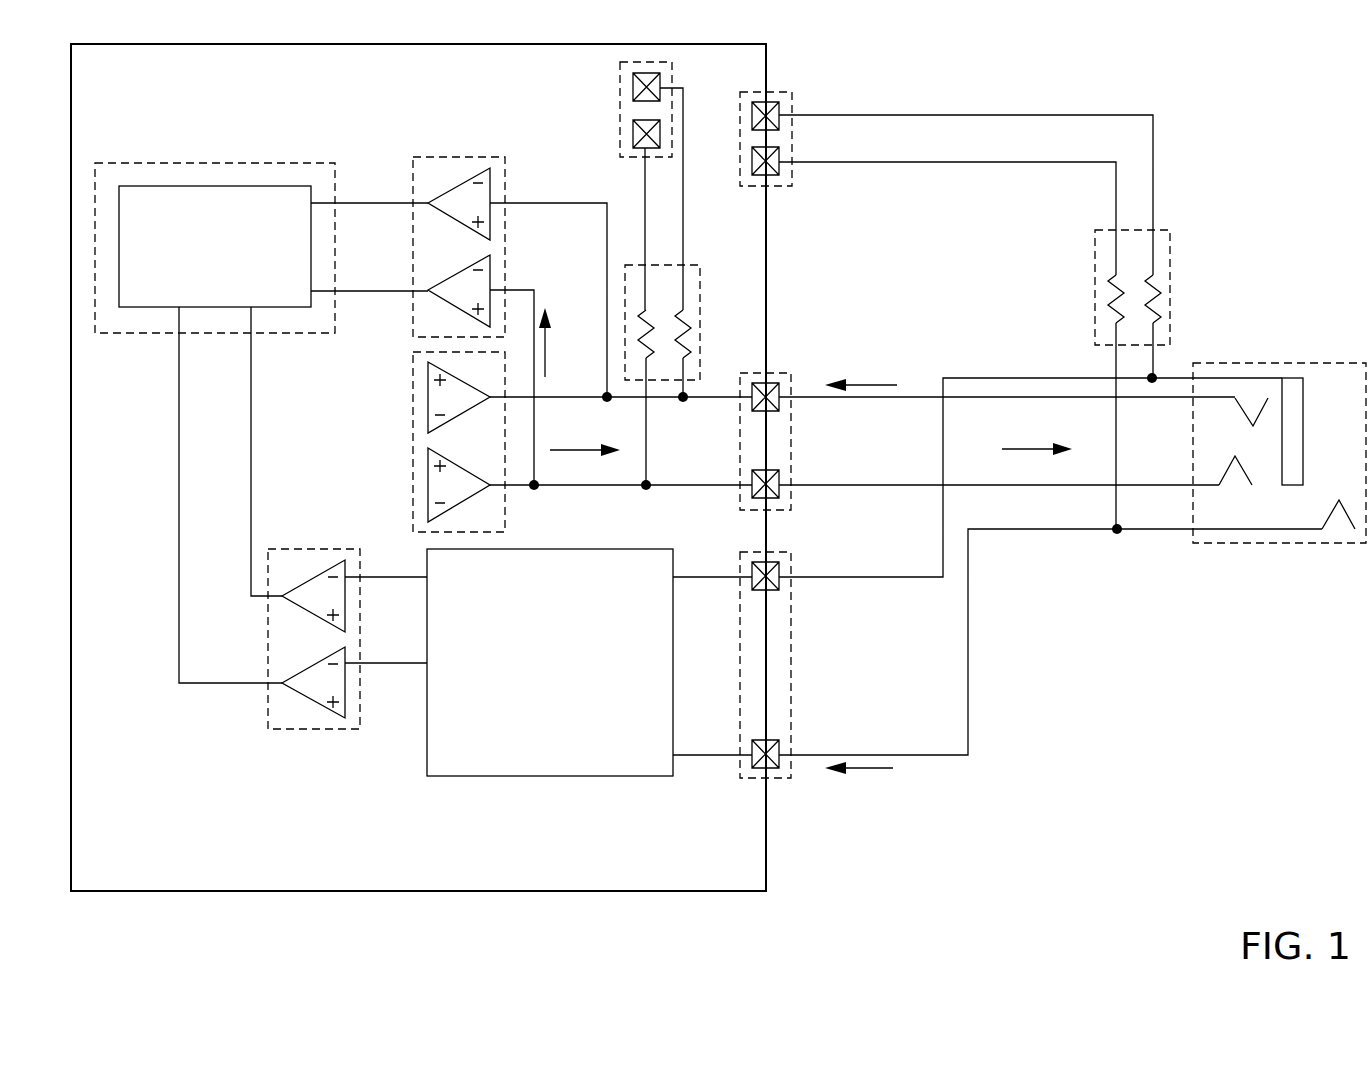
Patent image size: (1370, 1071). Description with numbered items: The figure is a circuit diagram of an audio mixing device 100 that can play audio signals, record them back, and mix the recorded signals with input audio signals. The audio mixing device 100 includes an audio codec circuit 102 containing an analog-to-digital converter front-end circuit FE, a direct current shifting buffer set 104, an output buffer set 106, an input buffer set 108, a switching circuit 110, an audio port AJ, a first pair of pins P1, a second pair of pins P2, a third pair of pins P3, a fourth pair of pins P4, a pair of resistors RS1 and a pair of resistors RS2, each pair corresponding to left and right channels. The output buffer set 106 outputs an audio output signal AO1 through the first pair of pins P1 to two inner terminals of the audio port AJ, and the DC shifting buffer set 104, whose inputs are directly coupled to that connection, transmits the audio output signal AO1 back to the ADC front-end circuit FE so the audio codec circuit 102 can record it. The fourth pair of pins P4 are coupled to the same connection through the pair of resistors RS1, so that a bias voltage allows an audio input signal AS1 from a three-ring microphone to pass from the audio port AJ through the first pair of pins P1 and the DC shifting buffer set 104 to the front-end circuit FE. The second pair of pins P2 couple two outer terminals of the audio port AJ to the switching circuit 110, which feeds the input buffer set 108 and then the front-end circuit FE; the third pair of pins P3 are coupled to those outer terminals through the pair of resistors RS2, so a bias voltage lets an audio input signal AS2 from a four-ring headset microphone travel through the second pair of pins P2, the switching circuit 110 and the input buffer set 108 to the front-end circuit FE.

The audio mixing device 100 is at (1259, 82).
The audio codec circuit 102 is at (261, 384).
The analog-to-digital converter front-end circuit FE is at (233, 257).
The direct current shifting buffer set 104 is at (448, 157).
The output buffer set 106 is at (413, 437).
The input buffer set 108 is at (308, 549).
The switching circuit 110 is at (530, 677).
The first pair of pins P1 is at (791, 445).
The second pair of pins P2 is at (791, 665).
The third pair of pins P3 is at (792, 180).
The fourth pair of pins P4 is at (620, 108).
The pair of resistors RS1 is at (700, 265).
The pair of resistors RS2 is at (1168, 230).
The audio port AJ is at (1315, 363).
The audio output signal AO1 is at (805, 382).
The audio input signal AS1 is at (863, 372).
The audio input signal AS2 is at (859, 780).